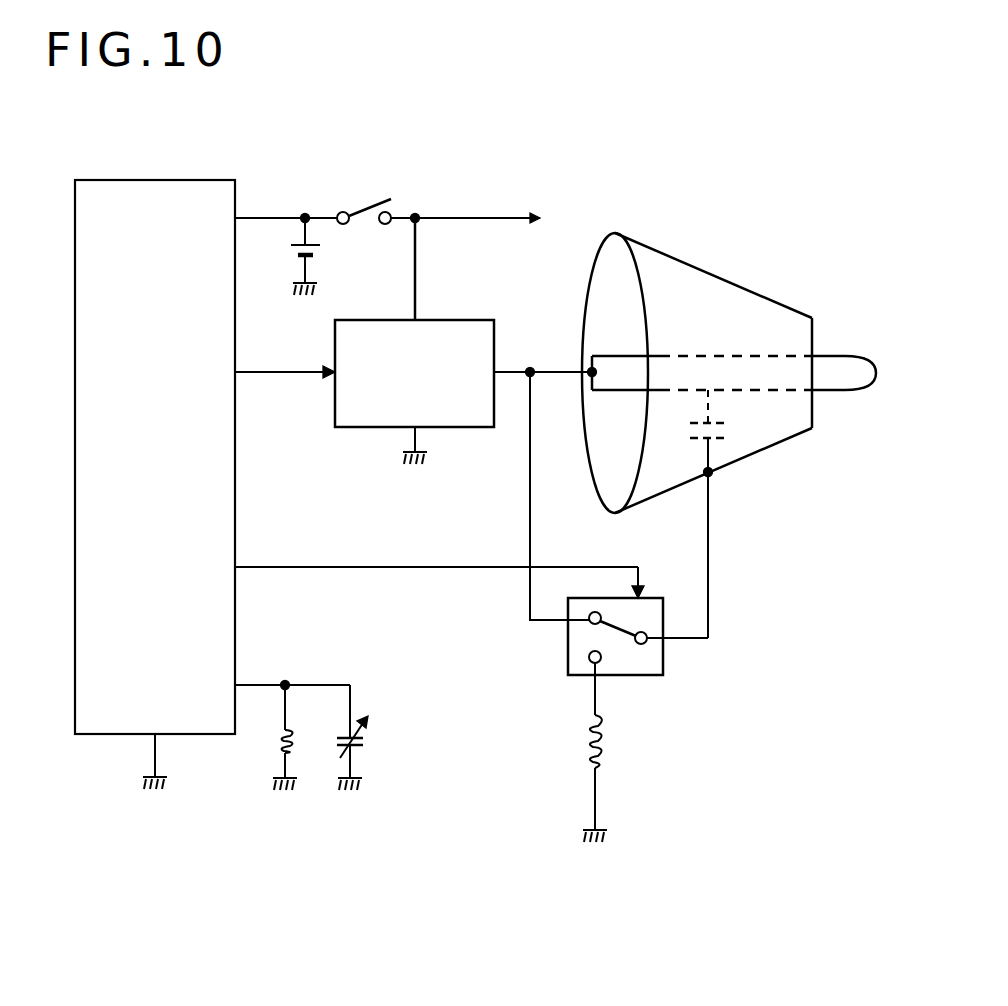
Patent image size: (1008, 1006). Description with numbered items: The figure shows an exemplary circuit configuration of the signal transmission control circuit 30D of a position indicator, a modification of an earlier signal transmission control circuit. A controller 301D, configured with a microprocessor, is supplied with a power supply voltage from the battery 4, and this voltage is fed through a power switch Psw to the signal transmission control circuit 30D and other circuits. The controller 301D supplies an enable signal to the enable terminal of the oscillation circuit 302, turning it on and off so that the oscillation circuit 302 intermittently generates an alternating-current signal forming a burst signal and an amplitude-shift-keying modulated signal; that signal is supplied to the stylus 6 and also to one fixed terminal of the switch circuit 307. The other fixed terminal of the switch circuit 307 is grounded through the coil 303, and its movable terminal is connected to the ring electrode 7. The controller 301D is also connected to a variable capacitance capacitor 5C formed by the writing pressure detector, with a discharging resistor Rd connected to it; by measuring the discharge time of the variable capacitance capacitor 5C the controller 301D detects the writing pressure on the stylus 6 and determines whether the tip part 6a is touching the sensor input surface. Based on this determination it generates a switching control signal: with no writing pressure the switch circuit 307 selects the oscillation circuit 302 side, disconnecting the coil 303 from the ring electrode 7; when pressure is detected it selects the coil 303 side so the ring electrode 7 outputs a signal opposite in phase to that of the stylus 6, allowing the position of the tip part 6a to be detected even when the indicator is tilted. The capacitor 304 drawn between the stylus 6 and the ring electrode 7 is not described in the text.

The controller 301D is at (140, 178).
The power switch Psw is at (370, 207).
The signal transmission control circuit 30D is at (505, 198).
The battery 4 is at (318, 251).
The oscillation circuit 302 is at (452, 318).
The stylus 6 is at (757, 368).
The tip part 6a is at (840, 368).
The capacitor 304 is at (730, 430).
The ring electrode 7 is at (752, 462).
The switch circuit 307 is at (665, 657).
The coil 303 is at (608, 740).
The discharging resistor Rd is at (272, 748).
The variable capacitance capacitor 5C is at (365, 742).